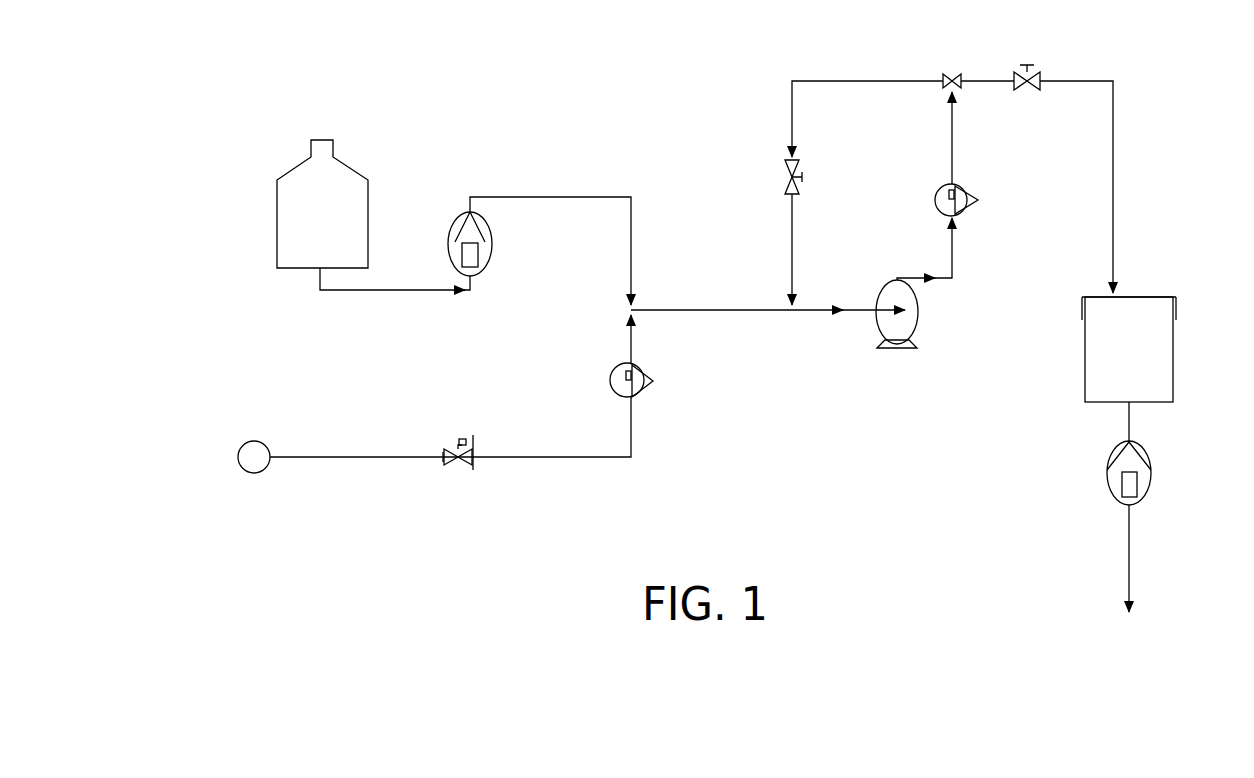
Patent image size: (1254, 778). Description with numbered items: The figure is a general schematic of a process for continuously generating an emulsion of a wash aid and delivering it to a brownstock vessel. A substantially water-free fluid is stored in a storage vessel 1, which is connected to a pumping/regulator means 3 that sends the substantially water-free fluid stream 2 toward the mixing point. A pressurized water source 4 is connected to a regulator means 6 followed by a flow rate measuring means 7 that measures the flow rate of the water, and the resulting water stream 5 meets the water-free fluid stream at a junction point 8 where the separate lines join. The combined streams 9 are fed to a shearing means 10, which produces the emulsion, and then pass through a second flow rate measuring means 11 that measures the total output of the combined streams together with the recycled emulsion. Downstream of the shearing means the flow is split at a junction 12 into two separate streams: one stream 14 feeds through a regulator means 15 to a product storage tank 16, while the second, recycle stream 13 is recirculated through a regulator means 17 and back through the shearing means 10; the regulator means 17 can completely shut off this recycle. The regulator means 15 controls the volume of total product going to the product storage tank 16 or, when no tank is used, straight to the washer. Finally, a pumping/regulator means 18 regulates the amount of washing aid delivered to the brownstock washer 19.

The storage vessel 1 is at (322, 204).
The substantially water-free fluid stream 2 is at (395, 297).
The pumping/regulator means 3 is at (533, 247).
The water source 4 is at (254, 457).
The water stream 5 is at (450, 446).
The regulator means 6 is at (458, 469).
The flow rate measuring means 7 is at (620, 371).
The junction point 8 is at (609, 331).
The combined streams 9 is at (768, 330).
The shearing means 10 is at (914, 300).
The second flow rate measuring means 11 is at (972, 154).
The junction 12 is at (952, 73).
The recycle stream 13 is at (793, 270).
The stream 14 is at (988, 85).
The regulator means 15 is at (1024, 62).
The product storage tank 16 is at (1129, 349).
The regulator means 17 is at (774, 177).
The pumping/regulator means 18 is at (1146, 453).
The brownstock washer 19 is at (1132, 581).